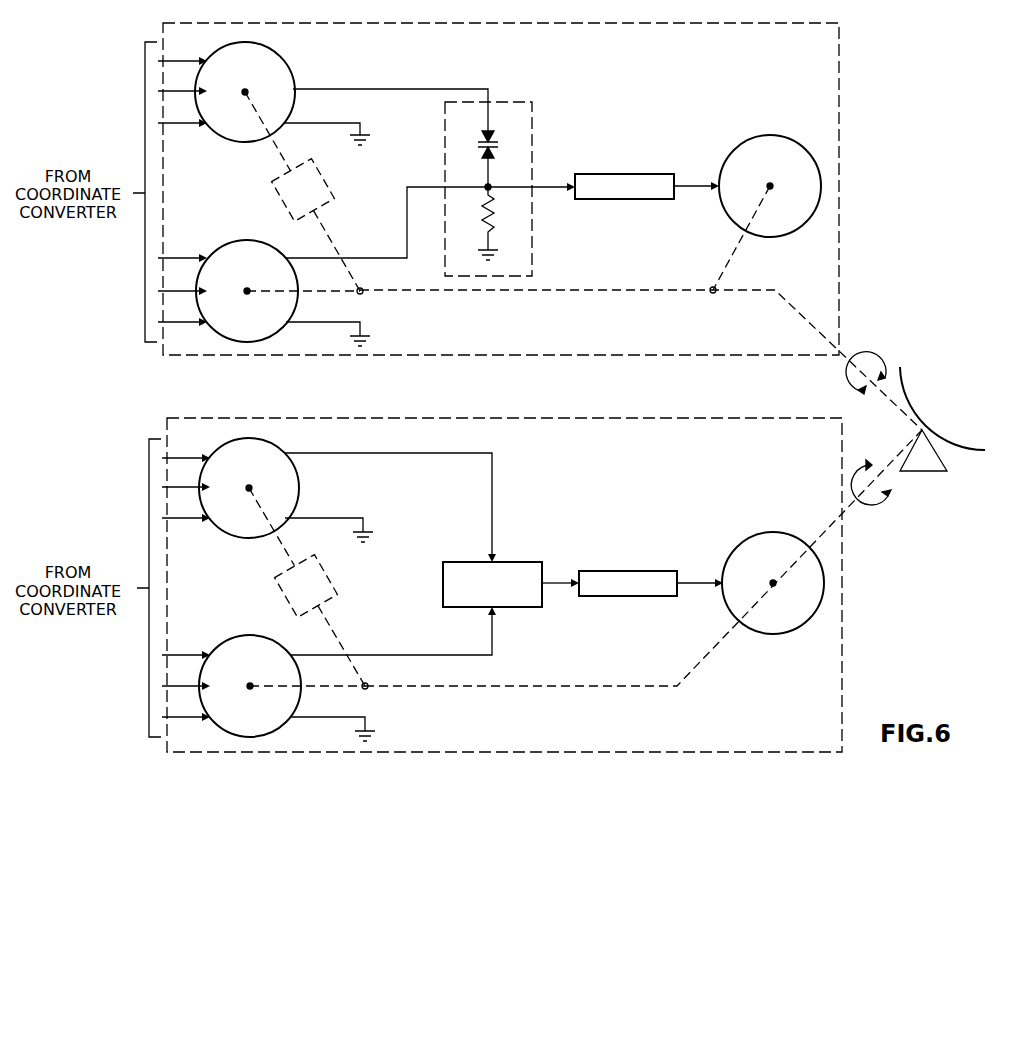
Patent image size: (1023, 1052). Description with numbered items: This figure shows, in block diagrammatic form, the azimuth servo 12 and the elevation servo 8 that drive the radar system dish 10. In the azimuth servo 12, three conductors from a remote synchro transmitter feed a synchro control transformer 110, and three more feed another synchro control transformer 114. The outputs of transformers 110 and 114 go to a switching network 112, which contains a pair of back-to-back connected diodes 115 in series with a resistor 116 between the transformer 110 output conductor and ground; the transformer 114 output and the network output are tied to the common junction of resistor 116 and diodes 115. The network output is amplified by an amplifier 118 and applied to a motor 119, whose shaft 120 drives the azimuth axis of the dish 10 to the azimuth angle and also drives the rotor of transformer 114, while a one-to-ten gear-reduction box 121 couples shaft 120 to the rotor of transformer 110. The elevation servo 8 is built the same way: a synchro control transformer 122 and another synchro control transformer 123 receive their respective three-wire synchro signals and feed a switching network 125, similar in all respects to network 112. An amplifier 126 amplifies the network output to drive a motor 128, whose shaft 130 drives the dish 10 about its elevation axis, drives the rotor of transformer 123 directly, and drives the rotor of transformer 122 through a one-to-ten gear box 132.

The elevation servo 8 is at (638, 752).
The radar system dish 10 is at (905, 386).
The azimuth servo 12 is at (839, 45).
The synchro control transformer 110 is at (288, 63).
The switching network 112 is at (514, 103).
The synchro control transformer 114 is at (246, 240).
The back-to-back connected diodes 115 is at (506, 148).
The resistor 116 is at (494, 214).
The amplifier 118 is at (650, 172).
The motor 119 is at (728, 156).
The shaft 120 is at (628, 290).
The gear-reduction box 121 is at (330, 196).
The synchro control transformer 122 is at (282, 452).
The synchro control transformer 123 is at (244, 636).
The switching network 125 is at (514, 561).
The amplifier 126 is at (612, 570).
The motor 128 is at (744, 539).
The shaft 130 is at (602, 682).
The gear box 132 is at (333, 589).